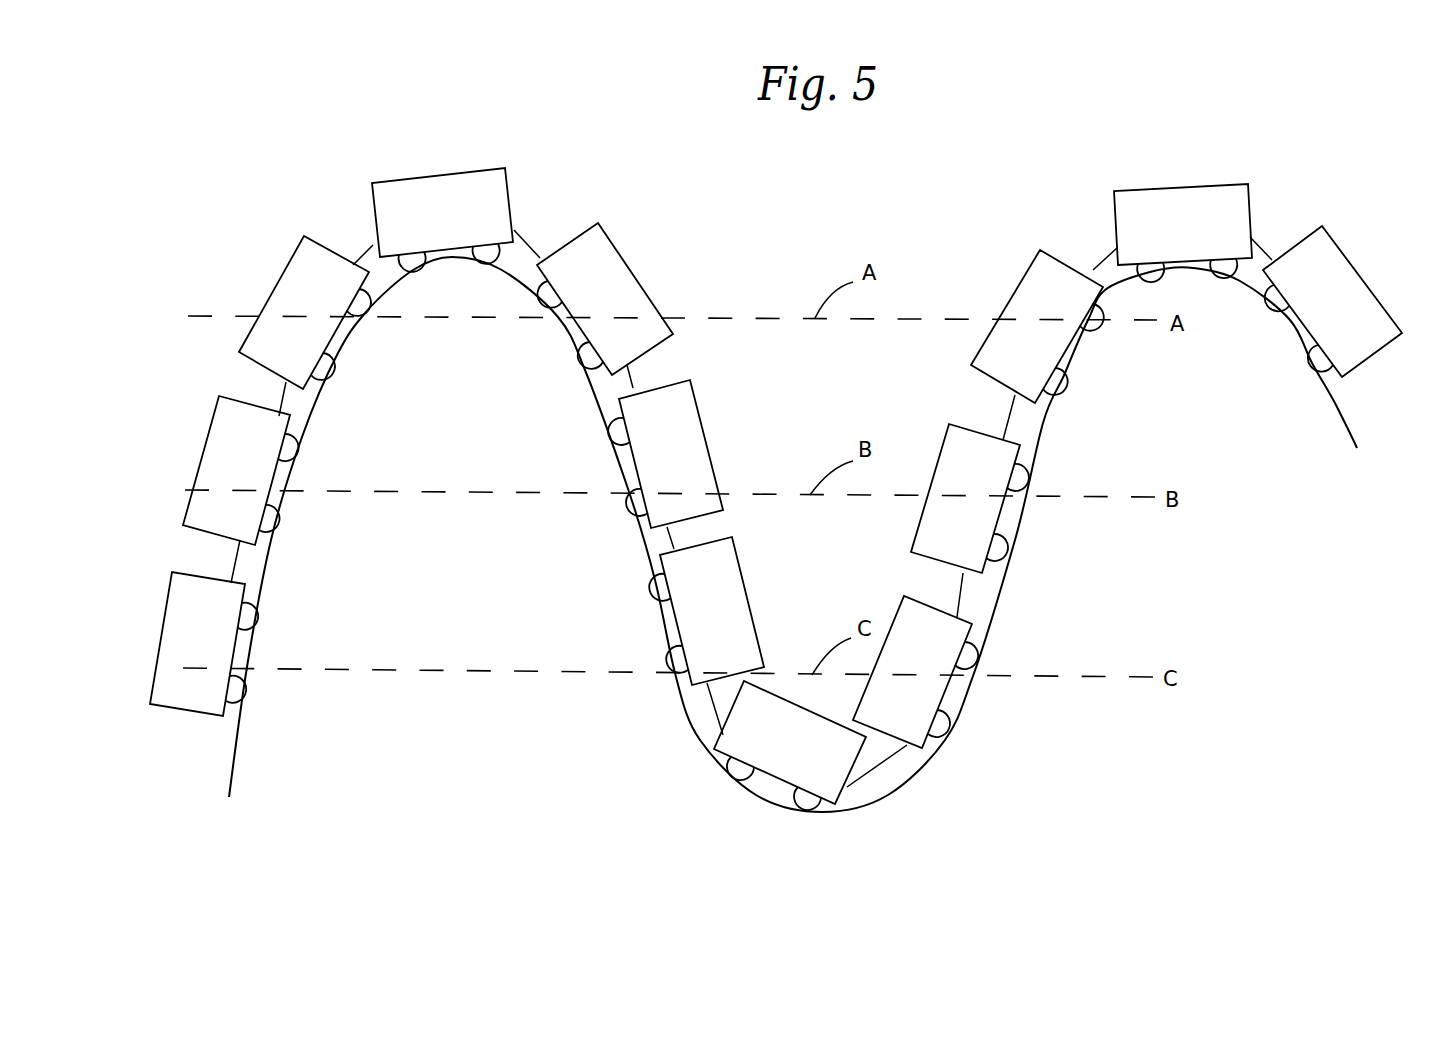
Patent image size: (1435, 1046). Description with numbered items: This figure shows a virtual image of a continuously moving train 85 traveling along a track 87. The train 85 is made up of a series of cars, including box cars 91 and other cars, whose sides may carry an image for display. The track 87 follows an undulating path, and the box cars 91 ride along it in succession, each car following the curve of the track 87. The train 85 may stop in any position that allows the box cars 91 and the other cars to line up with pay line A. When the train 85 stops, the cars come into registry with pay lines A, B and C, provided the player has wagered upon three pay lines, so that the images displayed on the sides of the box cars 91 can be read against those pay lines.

The train 85 is at (652, 170).
The track 87 is at (509, 276).
The box cars 91 is at (630, 283).